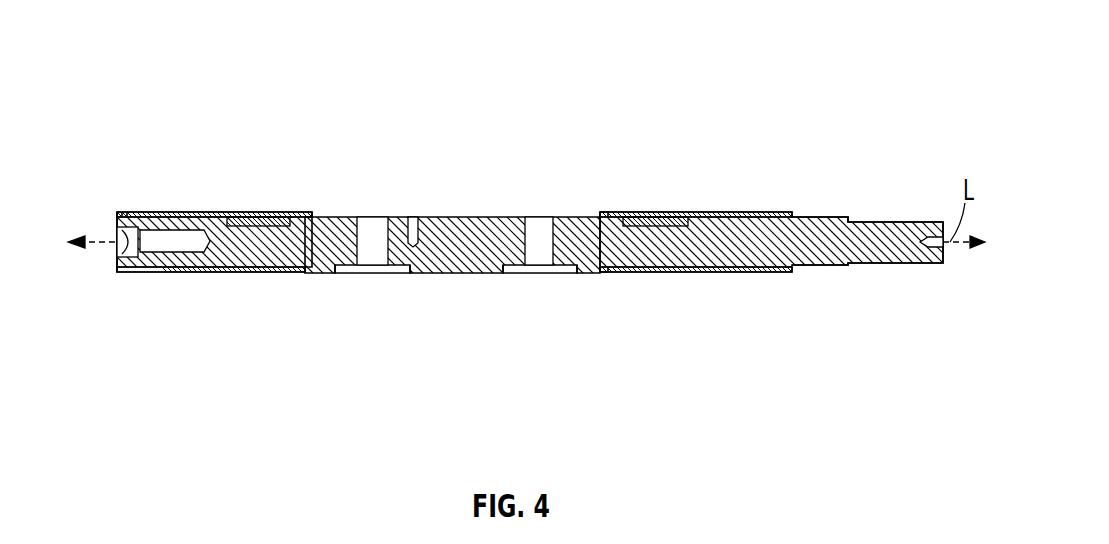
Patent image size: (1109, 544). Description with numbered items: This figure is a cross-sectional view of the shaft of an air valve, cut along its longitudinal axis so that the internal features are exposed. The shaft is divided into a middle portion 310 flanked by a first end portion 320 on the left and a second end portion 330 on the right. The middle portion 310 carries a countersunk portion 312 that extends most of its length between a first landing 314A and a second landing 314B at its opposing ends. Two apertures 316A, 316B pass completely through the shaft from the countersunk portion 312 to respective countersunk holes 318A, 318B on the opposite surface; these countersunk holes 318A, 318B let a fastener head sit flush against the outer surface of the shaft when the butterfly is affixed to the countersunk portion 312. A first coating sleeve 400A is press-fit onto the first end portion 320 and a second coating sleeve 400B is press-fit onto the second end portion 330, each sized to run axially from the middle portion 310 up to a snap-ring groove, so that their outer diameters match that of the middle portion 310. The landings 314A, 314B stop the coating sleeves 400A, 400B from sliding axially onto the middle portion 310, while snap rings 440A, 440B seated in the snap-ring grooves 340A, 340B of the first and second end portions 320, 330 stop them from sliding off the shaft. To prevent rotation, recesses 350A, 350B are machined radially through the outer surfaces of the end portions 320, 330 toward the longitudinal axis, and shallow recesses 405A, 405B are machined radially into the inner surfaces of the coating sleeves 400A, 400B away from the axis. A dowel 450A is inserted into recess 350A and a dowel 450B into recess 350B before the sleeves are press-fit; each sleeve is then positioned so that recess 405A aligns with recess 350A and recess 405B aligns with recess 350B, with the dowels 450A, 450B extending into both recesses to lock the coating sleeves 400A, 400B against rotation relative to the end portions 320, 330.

The middle portion 310 is at (607, 276).
The countersunk portion 312 is at (442, 217).
The first landing 314A is at (308, 213).
The second landing 314B is at (605, 212).
The aperture 316A is at (370, 217).
The aperture 316B is at (535, 217).
The countersunk hole 318A is at (396, 266).
The countersunk hole 318B is at (567, 266).
The first end portion 320 is at (117, 276).
The second end portion 330 is at (943, 276).
The snap-ring groove 340A is at (150, 270).
The snap-ring groove 340B is at (793, 214).
The recess 350A is at (263, 222).
The recess 350B is at (667, 222).
The first coating sleeve 400A is at (192, 211).
The second coating sleeve 400B is at (753, 212).
The recess 405A is at (252, 212).
The recess 405B is at (682, 212).
The snap ring 440A is at (122, 212).
The snap ring 440B is at (793, 212).
The dowel 450A is at (275, 216).
The dowel 450B is at (638, 212).